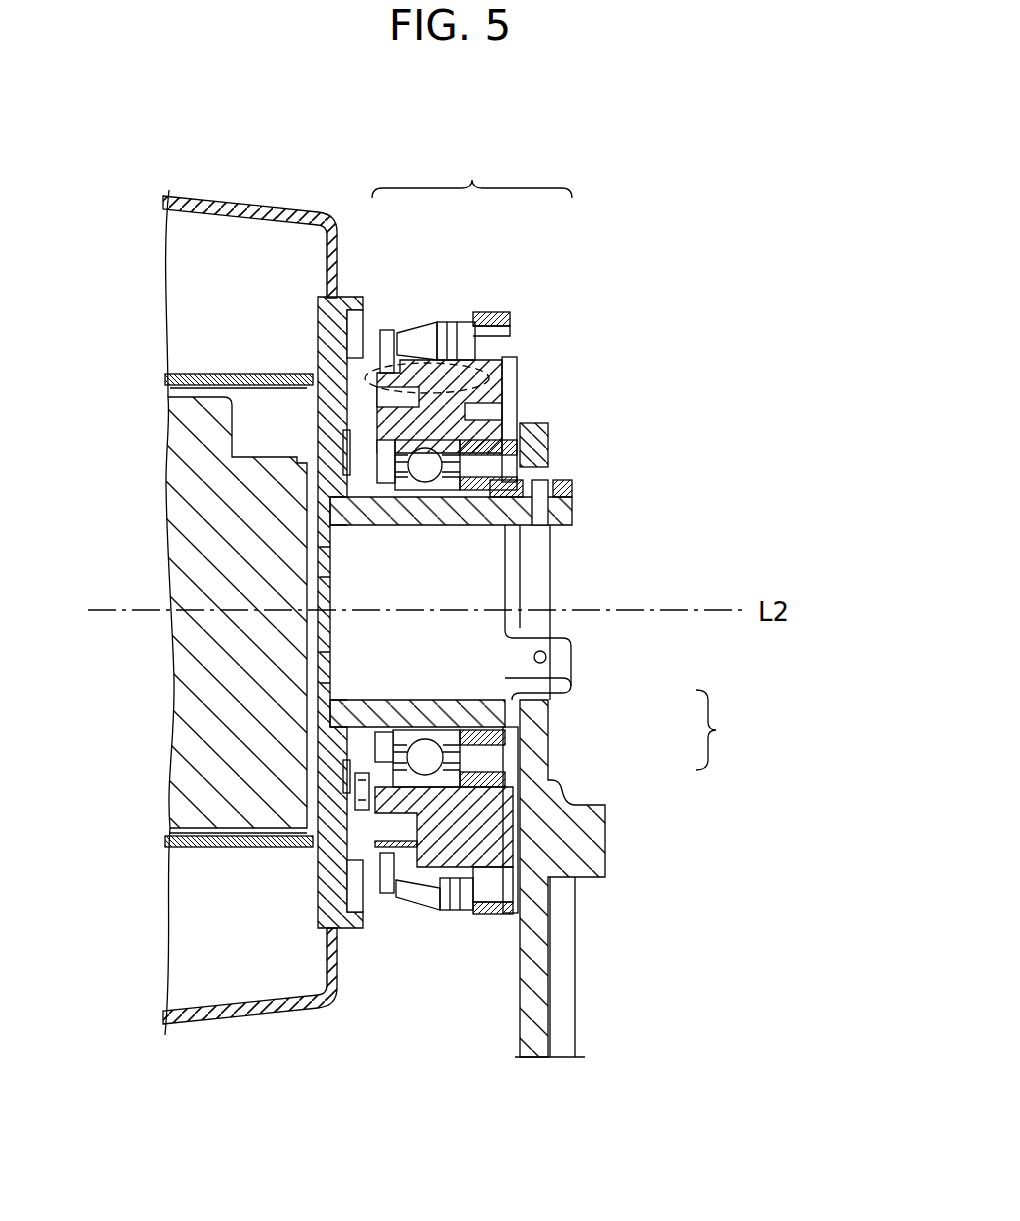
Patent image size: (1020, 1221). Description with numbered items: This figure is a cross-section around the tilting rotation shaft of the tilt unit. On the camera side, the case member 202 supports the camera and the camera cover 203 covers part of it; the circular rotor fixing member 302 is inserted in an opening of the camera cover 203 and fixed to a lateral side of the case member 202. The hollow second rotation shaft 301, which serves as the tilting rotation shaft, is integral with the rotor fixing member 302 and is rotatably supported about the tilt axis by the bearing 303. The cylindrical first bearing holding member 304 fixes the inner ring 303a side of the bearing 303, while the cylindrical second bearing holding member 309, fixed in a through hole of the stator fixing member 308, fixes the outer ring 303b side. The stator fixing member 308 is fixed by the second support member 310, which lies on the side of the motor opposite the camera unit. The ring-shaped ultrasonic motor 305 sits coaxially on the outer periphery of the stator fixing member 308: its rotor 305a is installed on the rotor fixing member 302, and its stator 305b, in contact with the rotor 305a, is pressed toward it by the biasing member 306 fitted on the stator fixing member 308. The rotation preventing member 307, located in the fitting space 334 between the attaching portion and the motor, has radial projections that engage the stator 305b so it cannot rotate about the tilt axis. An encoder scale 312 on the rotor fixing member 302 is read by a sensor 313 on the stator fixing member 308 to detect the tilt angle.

The case member 202 is at (310, 437).
The camera cover 203 is at (288, 207).
The second rotation shaft 301 is at (520, 520).
The rotor fixing member 302 is at (332, 352).
The bearing 303 is at (570, 738).
The inner ring 303a is at (445, 738).
The outer ring 303b is at (450, 778).
The first bearing holding member 304 is at (498, 485).
The ultrasonic motor 305 is at (472, 173).
The rotor 305a is at (386, 324).
The stator 305b is at (438, 333).
The biasing member 306 is at (462, 895).
The rotation preventing member 307 is at (410, 860).
The stator fixing member 308 is at (514, 378).
The second bearing holding member 309 is at (514, 424).
The second support member 310 is at (580, 845).
The scale 312 is at (345, 778).
The sensor 313 is at (360, 798).
The fitting space 334 is at (480, 384).